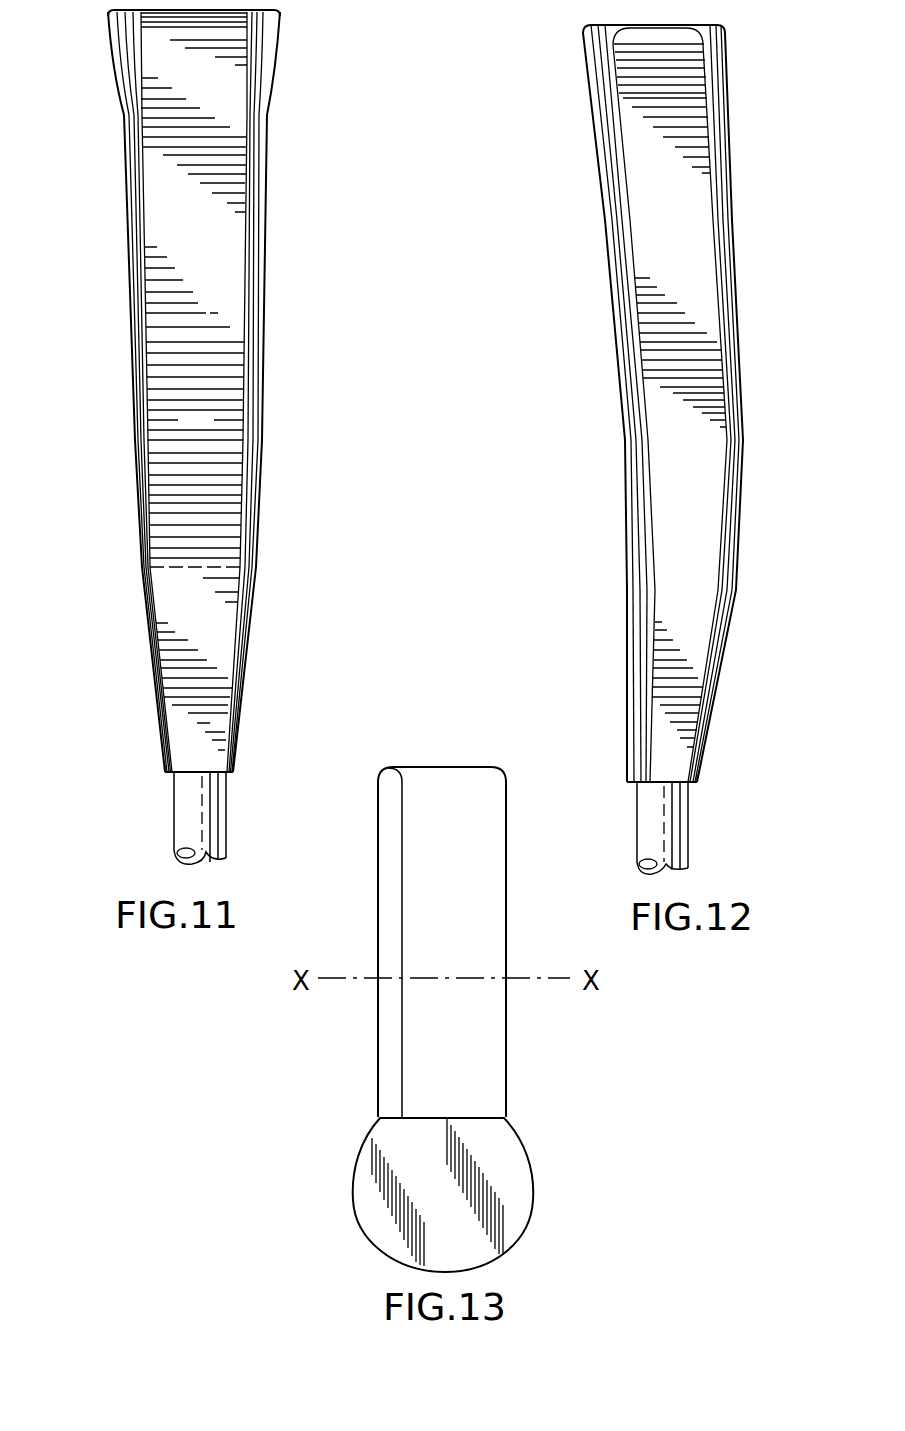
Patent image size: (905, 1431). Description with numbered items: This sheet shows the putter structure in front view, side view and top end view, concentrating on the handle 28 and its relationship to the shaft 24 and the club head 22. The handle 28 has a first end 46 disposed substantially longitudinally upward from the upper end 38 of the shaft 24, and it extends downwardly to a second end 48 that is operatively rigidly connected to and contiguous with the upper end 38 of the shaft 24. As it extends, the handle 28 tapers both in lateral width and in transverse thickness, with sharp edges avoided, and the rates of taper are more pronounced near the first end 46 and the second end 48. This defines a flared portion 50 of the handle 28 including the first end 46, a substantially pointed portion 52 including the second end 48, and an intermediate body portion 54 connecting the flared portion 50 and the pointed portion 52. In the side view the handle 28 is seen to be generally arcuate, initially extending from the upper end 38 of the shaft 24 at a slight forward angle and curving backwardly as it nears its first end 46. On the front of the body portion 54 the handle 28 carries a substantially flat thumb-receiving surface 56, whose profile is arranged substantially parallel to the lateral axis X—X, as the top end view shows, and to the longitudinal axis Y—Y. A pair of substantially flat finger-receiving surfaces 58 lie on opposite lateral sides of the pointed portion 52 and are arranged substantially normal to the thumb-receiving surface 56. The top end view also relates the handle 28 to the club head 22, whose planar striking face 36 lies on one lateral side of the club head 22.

In FIG. 13, the club head 22 is at (435, 806).
In FIG. 11, the shaft 24 is at (212, 813).
In FIG. 12, the shaft 24 is at (690, 820).
In FIG. 11, the handle 28 is at (86, 354).
In FIG. 12, the handle 28 is at (566, 362).
In FIG. 13, the handle 28 is at (327, 1203).
In FIG. 13, the striking face 36 is at (390, 948).
In FIG. 11, the upper end of the shaft 38 is at (167, 782).
In FIG. 12, the upper end of the shaft 38 is at (635, 787).
In FIG. 11, the first end 46 is at (90, 46).
In FIG. 12, the first end 46 is at (567, 52).
In FIG. 11, the second end 48 is at (145, 736).
In FIG. 12, the second end 48 is at (617, 745).
In FIG. 11, the flared portion 50 is at (281, 119).
In FIG. 12, the flared portion 50 is at (752, 123).
In FIG. 11, the pointed portion 52 is at (258, 680).
In FIG. 12, the pointed portion 52 is at (731, 688).
In FIG. 11, the body portion 54 is at (272, 345).
In FIG. 12, the body portion 54 is at (746, 350).
In FIG. 11, the thumb-receiving surface 56 is at (194, 303).
In FIG. 12, the thumb-receiving surface 56 is at (737, 528).
In FIG. 13, the thumb-receiving surface 56 is at (452, 1117).
In FIG. 11, the finger-receiving surfaces 58 is at (160, 680).
In FIG. 12, the finger-receiving surfaces 58 is at (682, 769).